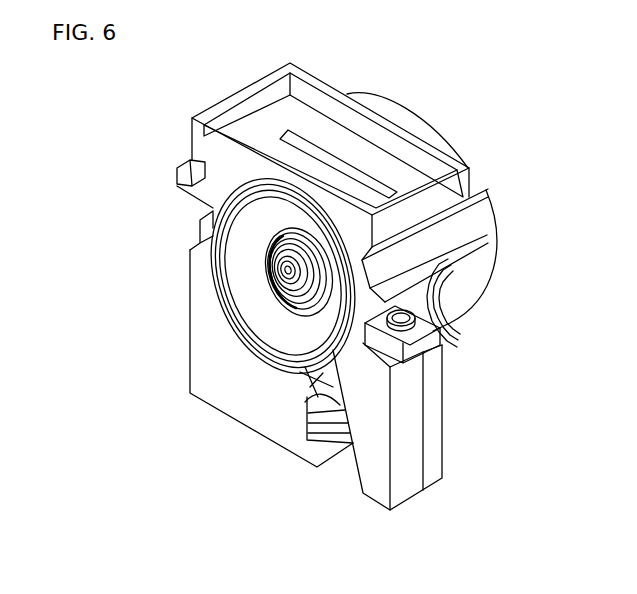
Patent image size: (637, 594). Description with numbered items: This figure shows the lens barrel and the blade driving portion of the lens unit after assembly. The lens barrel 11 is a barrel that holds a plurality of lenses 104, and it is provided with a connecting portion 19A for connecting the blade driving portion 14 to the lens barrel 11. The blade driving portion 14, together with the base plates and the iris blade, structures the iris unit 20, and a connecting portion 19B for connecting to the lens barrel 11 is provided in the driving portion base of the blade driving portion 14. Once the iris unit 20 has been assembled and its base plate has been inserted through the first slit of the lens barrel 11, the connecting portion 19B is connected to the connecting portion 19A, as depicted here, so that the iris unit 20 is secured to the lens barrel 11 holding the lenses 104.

The lens barrel 11 is at (250, 297).
The lenses 104 is at (266, 238).
The blade driving portion 14 is at (413, 400).
The connecting portion 19A is at (415, 323).
The connecting portion 19B is at (432, 293).
The iris unit 20 is at (257, 400).